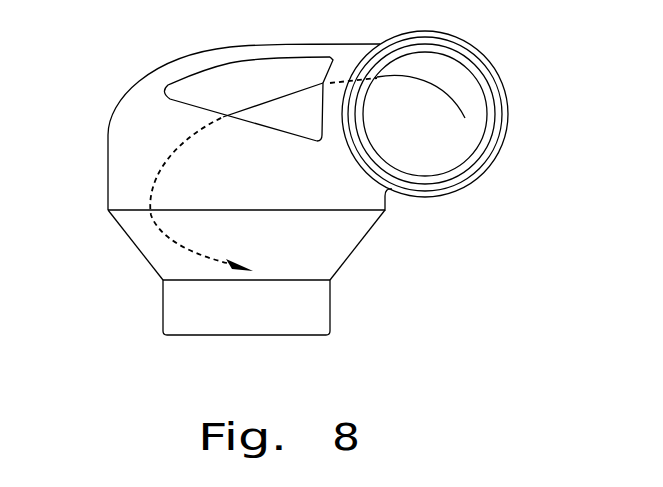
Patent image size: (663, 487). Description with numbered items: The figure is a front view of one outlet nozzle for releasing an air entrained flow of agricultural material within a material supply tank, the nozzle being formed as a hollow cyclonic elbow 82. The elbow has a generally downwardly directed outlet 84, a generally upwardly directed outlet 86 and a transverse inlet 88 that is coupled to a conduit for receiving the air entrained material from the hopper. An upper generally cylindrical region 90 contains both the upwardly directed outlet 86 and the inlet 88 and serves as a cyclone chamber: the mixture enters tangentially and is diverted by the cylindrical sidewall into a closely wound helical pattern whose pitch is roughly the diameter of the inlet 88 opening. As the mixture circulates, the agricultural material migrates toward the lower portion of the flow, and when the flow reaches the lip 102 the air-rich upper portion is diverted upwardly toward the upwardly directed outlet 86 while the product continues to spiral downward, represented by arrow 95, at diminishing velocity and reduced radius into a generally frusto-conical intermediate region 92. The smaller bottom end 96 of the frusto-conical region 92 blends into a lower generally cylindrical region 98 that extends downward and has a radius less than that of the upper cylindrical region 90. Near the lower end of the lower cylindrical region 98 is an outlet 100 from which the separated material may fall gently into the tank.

The cyclonic elbow 82 is at (458, 211).
The downwardly directed outlet 84 is at (223, 312).
The upwardly directed outlet 86 is at (280, 97).
The transverse inlet 88 is at (445, 142).
The upper cylindrical region 90 is at (108, 182).
The frusto-conical intermediate region 92 is at (148, 262).
The product flow arrow 95 is at (150, 222).
The smaller bottom end 96 is at (163, 283).
The lower cylindrical region 98 is at (313, 317).
The outlet 100 is at (289, 337).
The lip 102 is at (272, 121).